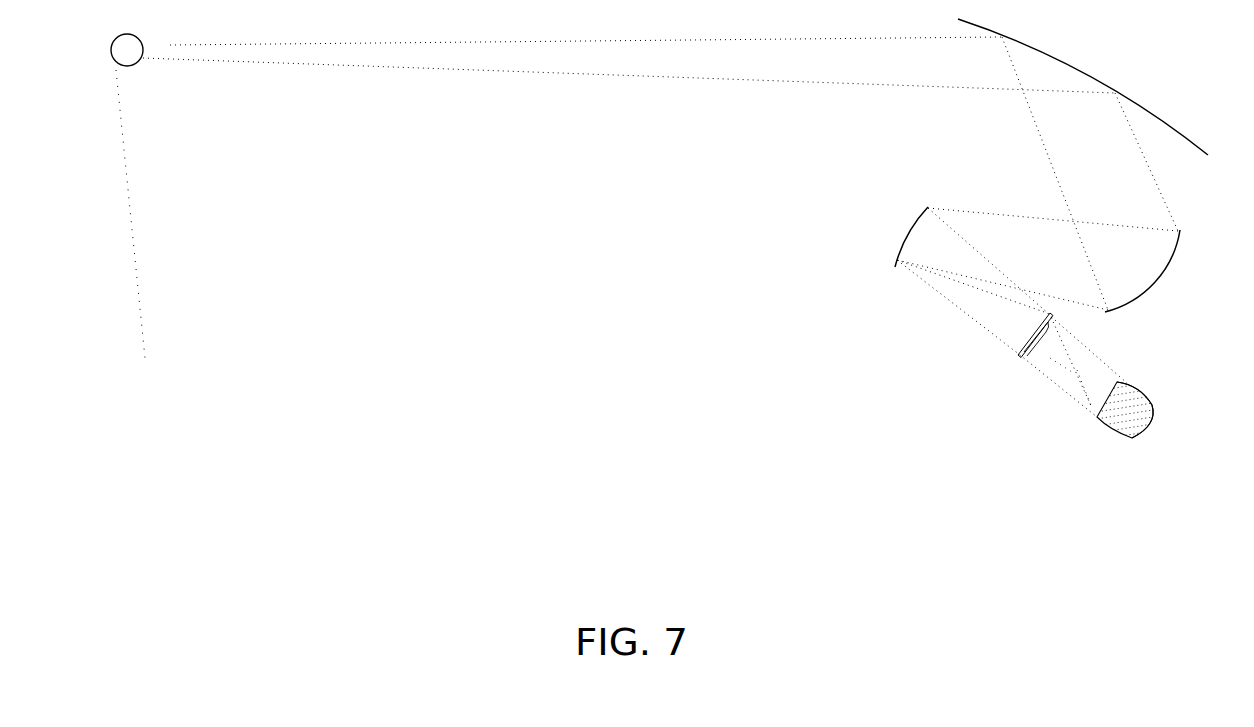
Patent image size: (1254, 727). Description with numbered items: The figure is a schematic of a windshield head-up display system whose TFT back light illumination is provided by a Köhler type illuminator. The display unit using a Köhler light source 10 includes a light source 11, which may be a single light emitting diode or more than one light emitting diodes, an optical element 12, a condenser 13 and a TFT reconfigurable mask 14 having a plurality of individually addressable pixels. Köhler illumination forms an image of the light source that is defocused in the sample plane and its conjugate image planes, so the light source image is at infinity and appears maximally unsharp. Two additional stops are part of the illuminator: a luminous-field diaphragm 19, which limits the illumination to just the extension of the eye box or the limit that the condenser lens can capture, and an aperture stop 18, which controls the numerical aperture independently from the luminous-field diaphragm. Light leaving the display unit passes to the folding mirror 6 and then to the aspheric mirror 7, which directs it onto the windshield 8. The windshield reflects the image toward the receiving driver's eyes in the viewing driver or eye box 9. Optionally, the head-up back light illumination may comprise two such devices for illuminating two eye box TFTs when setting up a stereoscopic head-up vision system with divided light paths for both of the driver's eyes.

The folding mirror 6 is at (896, 270).
The aspheric mirror 7 is at (1160, 278).
The windshield 8 is at (1153, 109).
The viewing driver or eye box 9 is at (133, 224).
The display unit using a Köhler light source 10 is at (1182, 422).
The light source 11 is at (1148, 430).
The optical element 12 is at (1123, 436).
The condenser 13 is at (1024, 360).
The TFT reconfigurable mask 14 is at (1018, 353).
The aperture stop 18 is at (1050, 404).
The luminous-field diaphragm 19 is at (1090, 405).